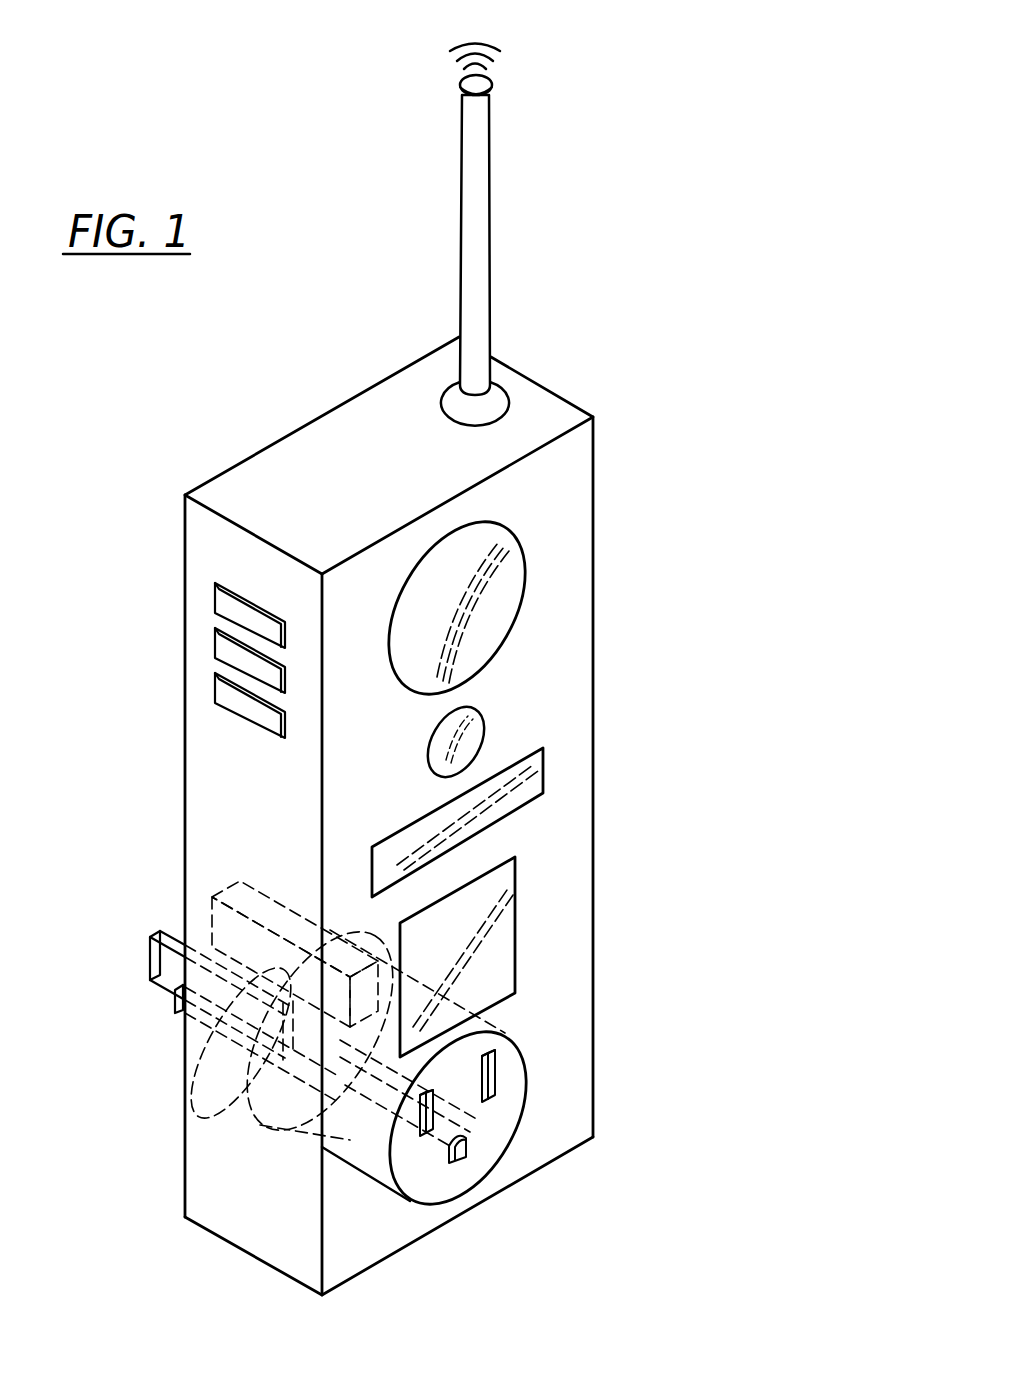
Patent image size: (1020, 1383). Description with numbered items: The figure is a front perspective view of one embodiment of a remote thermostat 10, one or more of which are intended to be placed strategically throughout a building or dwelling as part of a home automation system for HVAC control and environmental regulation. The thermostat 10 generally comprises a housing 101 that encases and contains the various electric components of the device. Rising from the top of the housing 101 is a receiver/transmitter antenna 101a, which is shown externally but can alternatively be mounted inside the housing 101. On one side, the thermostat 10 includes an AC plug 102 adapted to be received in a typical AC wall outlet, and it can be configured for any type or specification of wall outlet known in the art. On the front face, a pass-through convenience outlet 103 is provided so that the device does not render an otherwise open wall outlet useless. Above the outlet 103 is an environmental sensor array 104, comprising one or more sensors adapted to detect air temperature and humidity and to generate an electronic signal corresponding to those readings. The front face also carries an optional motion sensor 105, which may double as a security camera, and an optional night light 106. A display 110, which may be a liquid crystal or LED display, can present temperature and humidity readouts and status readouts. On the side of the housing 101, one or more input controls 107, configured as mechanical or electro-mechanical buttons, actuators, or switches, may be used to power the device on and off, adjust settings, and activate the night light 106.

The remote thermostat 10 is at (710, 79).
The housing 101 is at (298, 408).
The receiver/transmitter antenna 101a is at (490, 215).
The AC plug 102 is at (150, 937).
The pass-through convenience outlet 103 is at (523, 1055).
The environmental sensor array 104 is at (515, 907).
The motion sensor 105 is at (500, 712).
The night light 106 is at (523, 552).
The input controls 107 is at (173, 706).
The display 110 is at (543, 750).